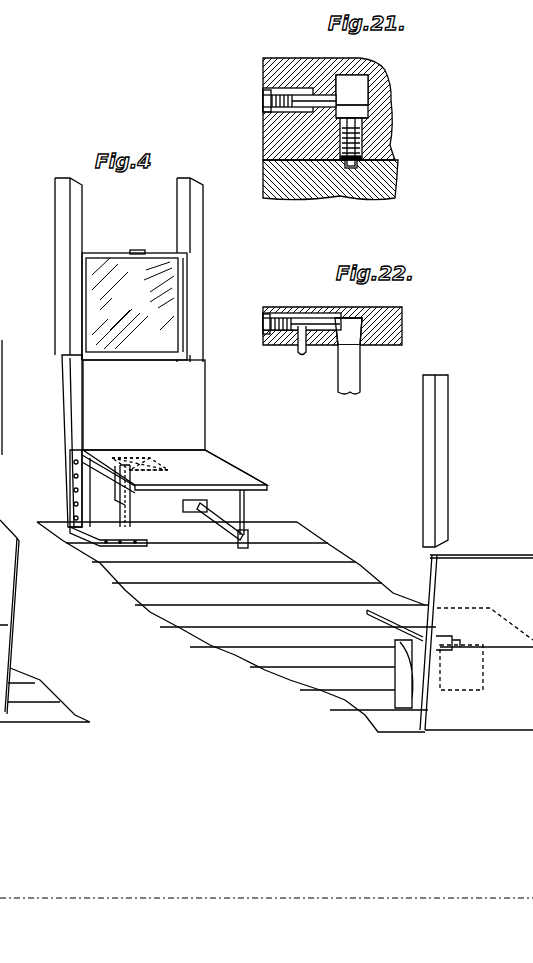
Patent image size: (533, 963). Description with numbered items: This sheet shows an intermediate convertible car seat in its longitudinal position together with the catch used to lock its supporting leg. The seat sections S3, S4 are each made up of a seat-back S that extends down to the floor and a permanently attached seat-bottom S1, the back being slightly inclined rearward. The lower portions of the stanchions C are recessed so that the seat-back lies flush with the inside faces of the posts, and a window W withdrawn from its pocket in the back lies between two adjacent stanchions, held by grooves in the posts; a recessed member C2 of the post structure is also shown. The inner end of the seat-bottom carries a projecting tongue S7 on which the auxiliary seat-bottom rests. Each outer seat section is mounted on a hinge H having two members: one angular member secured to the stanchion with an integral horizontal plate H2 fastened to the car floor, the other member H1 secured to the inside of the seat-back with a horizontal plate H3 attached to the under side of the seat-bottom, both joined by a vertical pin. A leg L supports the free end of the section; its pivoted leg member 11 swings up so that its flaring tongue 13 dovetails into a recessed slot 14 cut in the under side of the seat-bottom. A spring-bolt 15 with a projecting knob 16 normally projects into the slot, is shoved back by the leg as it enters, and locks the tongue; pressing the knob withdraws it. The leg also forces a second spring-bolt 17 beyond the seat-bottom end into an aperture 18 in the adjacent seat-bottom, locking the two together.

In FIG. 4, the stanchion C is at (0, 456).
In FIG. 4, the post extension C2 is at (72, 360).
In FIG. 4, the window W is at (134, 305).
In FIG. 4, the seat-back S is at (144, 405).
In FIG. 4, the seat-bottom S1 is at (298, 579).
In FIG. 4, the seat section S3 is at (237, 415).
In FIG. 4, the seat section S4 is at (412, 577).
In FIG. 4, the projecting tongue S7 is at (262, 488).
In FIG. 4, the leg L is at (250, 516).
In FIG. 4, the hinge H is at (115, 552).
In FIG. 4, the hinge member H1 is at (135, 500).
In FIG. 4, the horizontal plate H2 is at (140, 541).
In FIG. 4, the horizontal plate H3 is at (160, 466).
In FIG. 22, the leg member 11 is at (360, 375).
In FIG. 21, the flaring tongue 13 is at (355, 110).
In FIG. 22, the flaring tongue 13 is at (356, 330).
In FIG. 21, the recessed slot 14 is at (352, 96).
In FIG. 22, the recessed slot 14 is at (402, 312).
In FIG. 21, the spring-bolt 15 is at (306, 95).
In FIG. 22, the spring-bolt 15 is at (312, 326).
In FIG. 22, the knob 16 is at (300, 346).
In FIG. 21, the spring-bolt 17 is at (368, 142).
In FIG. 21, the aperture 18 is at (357, 165).